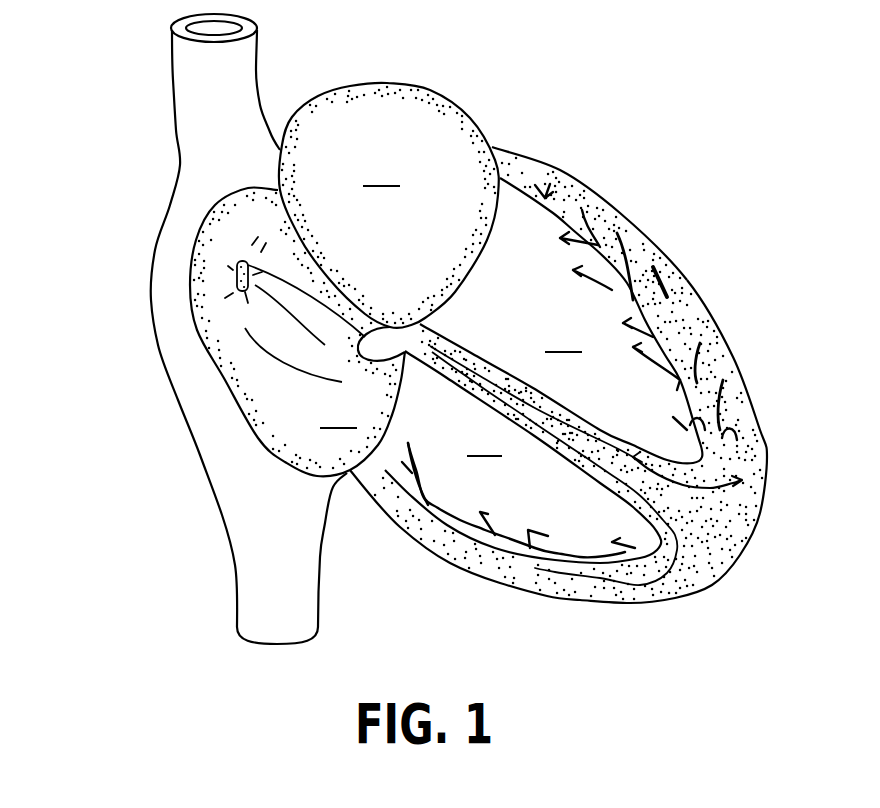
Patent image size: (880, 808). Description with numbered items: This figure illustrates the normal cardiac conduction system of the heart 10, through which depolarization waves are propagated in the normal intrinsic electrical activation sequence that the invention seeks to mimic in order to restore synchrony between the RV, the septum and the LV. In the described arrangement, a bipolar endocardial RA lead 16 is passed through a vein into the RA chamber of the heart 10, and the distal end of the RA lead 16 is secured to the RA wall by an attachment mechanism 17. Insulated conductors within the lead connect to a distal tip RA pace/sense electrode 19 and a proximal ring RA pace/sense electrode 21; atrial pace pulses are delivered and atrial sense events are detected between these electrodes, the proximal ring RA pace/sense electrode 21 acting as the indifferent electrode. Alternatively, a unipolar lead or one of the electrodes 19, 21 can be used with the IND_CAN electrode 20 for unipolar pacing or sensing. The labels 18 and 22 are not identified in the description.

The heart 10 is at (103, 231).
The bipolar endocardial RA lead 16 is at (445, 364).
The attachment mechanism 17 is at (634, 496).
The Purkinje fibers 18 is at (569, 437).
The distal tip RA pace/sense electrode 19 is at (594, 242).
The IND_CAN electrode 20 is at (558, 461).
The proximal ring RA pace/sense electrode 21 is at (559, 395).
The left ventricular free wall 22 is at (589, 213).